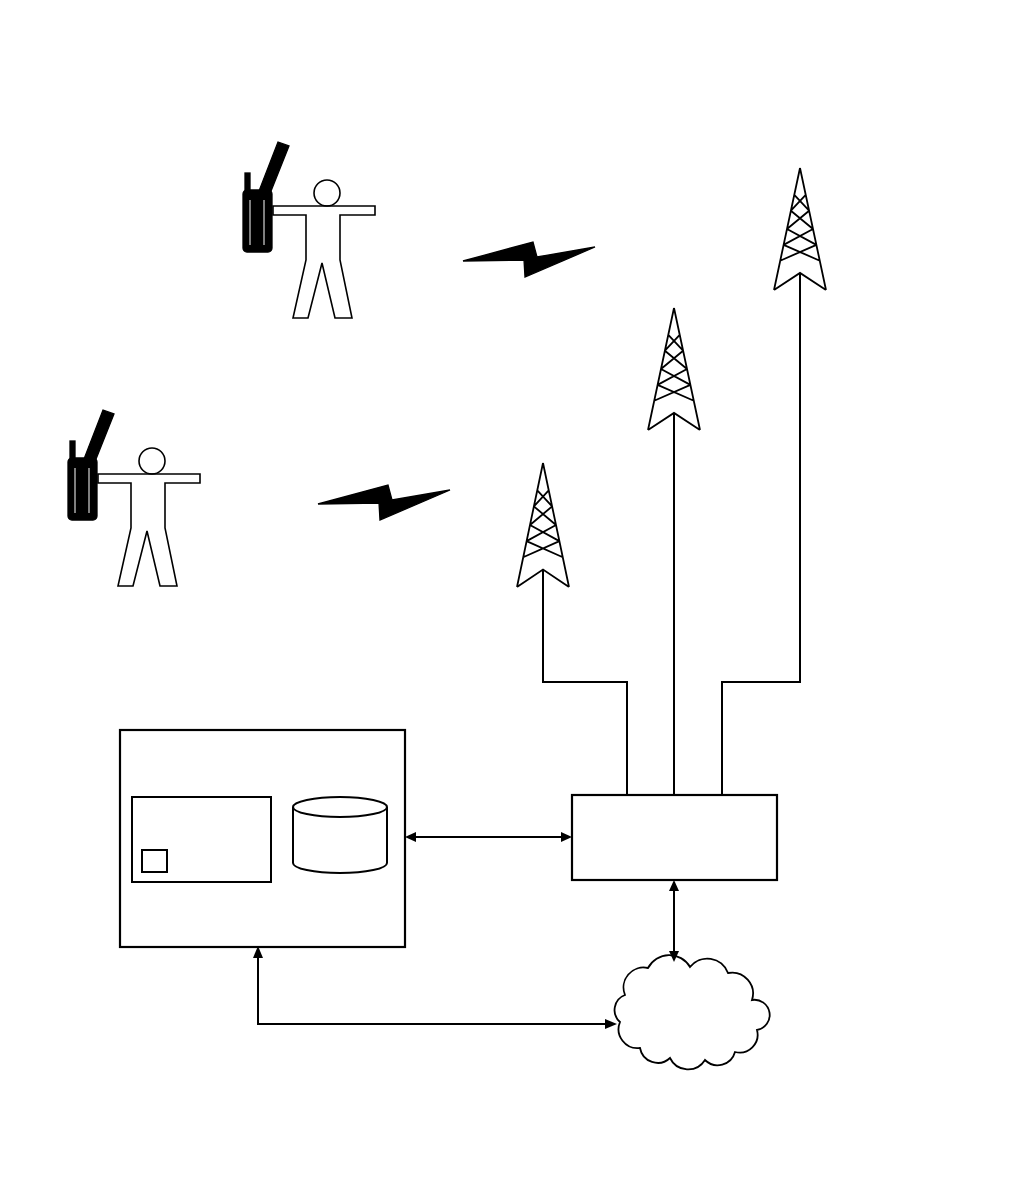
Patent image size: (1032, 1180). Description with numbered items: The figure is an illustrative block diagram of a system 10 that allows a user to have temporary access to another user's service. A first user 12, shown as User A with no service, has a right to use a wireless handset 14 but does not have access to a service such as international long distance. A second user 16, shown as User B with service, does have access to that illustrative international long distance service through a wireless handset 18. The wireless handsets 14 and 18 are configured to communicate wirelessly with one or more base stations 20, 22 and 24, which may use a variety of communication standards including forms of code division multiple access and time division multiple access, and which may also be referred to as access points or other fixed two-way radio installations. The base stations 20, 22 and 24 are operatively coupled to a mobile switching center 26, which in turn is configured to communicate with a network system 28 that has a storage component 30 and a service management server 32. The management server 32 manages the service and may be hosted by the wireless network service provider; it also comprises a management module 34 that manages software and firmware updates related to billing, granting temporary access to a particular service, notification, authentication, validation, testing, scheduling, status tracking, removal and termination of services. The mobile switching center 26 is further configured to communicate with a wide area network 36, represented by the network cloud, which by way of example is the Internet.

The system 10 is at (553, 82).
The first user 12 is at (343, 270).
The wireless handset 14 is at (277, 142).
The second user 16 is at (168, 538).
The wireless handset 18 is at (102, 410).
The base station 20 is at (813, 223).
The base station 22 is at (688, 362).
The base station 24 is at (555, 520).
The mobile switching center 26 is at (758, 793).
The network system 28 is at (241, 815).
The storage component 30 is at (313, 877).
The service management server 32 is at (272, 823).
The management module 34 is at (145, 873).
The wide area network 36 is at (757, 993).